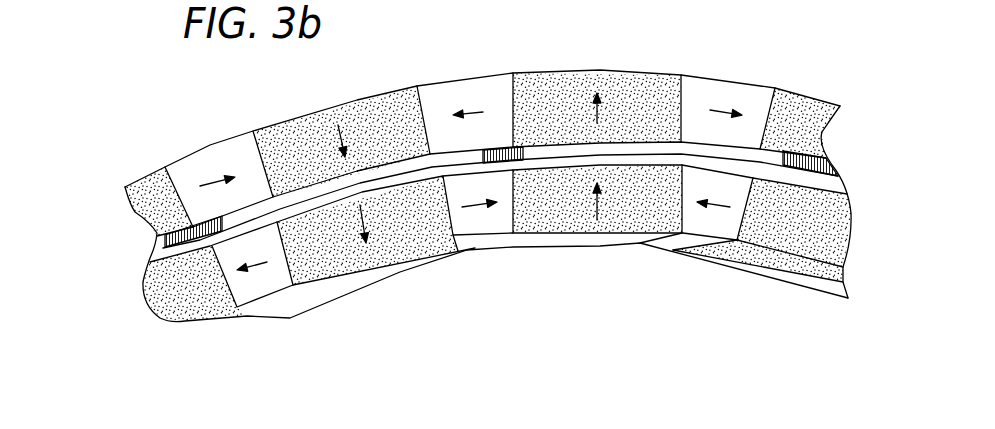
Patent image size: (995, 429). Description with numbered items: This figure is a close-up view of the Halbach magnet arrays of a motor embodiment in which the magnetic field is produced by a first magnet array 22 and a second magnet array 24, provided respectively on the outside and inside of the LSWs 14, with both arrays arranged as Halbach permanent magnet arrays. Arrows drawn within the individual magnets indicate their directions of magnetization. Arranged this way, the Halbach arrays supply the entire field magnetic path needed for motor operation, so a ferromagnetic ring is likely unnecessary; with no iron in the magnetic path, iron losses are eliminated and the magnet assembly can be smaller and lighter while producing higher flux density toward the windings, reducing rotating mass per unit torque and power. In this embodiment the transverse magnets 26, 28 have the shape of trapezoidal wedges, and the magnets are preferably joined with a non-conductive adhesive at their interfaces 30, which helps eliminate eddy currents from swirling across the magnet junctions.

The LSWs 14 is at (126, 253).
The first magnet array 22 is at (116, 210).
The second magnet array 24 is at (147, 323).
The transverse magnet 26 is at (207, 150).
The transverse magnet 28 is at (465, 78).
The interfaces 30 is at (773, 107).